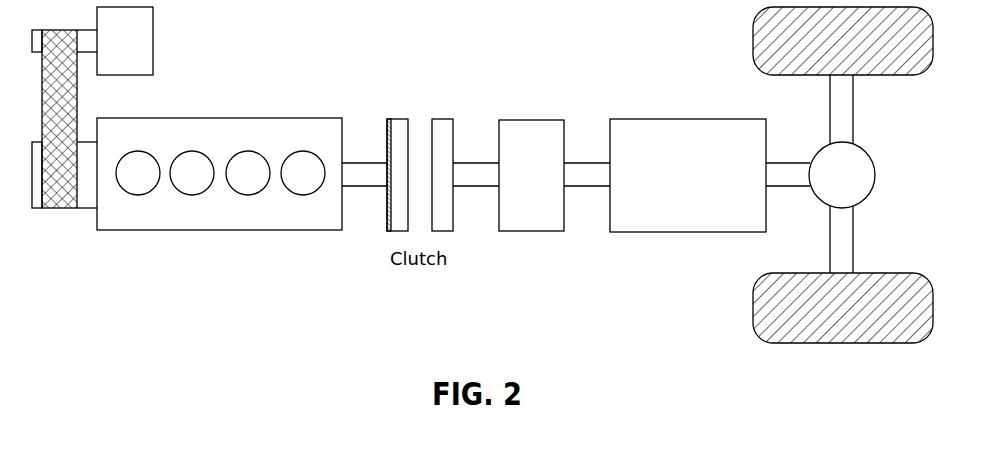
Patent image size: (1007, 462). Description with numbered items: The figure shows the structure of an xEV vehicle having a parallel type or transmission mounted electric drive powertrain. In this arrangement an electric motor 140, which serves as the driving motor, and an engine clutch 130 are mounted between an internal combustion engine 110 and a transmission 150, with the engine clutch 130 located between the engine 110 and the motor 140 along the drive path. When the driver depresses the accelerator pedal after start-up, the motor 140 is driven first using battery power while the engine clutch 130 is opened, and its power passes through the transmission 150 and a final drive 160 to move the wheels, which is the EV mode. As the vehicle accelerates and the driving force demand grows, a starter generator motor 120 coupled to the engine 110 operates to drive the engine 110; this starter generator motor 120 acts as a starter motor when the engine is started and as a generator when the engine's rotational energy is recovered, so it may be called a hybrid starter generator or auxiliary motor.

The internal combustion engine 110 is at (316, 118).
The starter generator motor 120 is at (153, 22).
The engine clutch 130 is at (440, 119).
The electric motor 140 is at (530, 120).
The transmission 150 is at (696, 119).
The final drive 160 is at (870, 150).